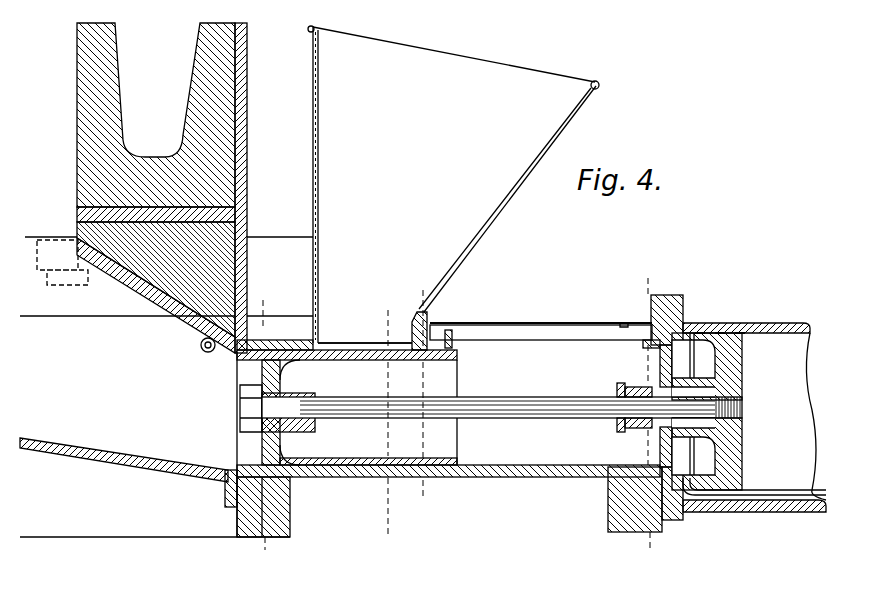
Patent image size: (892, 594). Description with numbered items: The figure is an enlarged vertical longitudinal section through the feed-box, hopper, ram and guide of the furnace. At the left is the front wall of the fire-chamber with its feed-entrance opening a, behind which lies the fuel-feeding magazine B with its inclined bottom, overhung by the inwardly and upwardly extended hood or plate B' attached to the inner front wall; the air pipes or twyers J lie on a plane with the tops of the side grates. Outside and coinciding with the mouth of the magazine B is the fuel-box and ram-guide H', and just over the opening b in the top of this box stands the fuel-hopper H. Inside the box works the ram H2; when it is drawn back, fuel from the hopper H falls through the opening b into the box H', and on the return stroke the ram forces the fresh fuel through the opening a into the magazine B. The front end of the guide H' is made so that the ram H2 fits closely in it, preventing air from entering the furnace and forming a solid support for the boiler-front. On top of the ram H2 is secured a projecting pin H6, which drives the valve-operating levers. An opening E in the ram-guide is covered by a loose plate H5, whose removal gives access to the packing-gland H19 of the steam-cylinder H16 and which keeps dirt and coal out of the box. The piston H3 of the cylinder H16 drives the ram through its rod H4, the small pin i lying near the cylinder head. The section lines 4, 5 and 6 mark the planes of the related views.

The fuel-hopper H is at (453, 188).
The hood or plate B' is at (156, 295).
The air pipes or twyers J is at (280, 276).
The section line 5- 5 is at (326, 429).
The feed-entrance opening a is at (236, 357).
The ram H2 is at (260, 372).
The fuel-feeding chamber or magazine B is at (124, 453).
The fuel-box and ram-guide H' is at (448, 448).
The section line 4- 4 is at (422, 397).
The opening in top of fuel-box b is at (365, 334).
The projecting pin H6 is at (458, 330).
The loose plate H5 is at (540, 325).
The opening in ram-guide E is at (541, 343).
The shaft H4 is at (524, 394).
The collar H19 is at (632, 388).
The pin i is at (623, 322).
The section line 6- 6 is at (648, 415).
The steam-cylinder H16 is at (757, 322).
The piston H3 is at (744, 386).